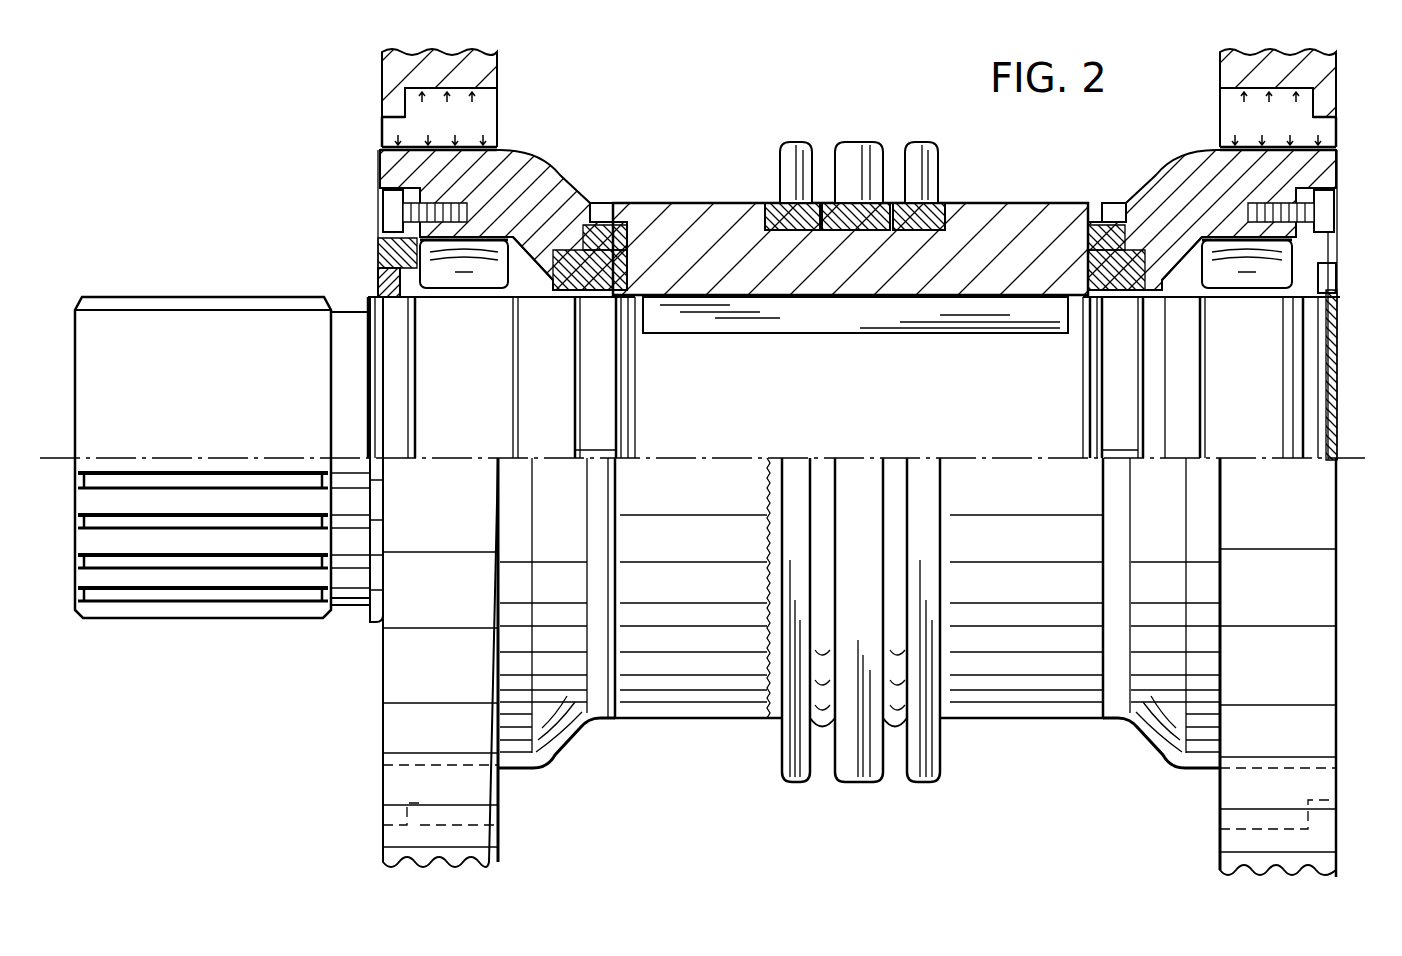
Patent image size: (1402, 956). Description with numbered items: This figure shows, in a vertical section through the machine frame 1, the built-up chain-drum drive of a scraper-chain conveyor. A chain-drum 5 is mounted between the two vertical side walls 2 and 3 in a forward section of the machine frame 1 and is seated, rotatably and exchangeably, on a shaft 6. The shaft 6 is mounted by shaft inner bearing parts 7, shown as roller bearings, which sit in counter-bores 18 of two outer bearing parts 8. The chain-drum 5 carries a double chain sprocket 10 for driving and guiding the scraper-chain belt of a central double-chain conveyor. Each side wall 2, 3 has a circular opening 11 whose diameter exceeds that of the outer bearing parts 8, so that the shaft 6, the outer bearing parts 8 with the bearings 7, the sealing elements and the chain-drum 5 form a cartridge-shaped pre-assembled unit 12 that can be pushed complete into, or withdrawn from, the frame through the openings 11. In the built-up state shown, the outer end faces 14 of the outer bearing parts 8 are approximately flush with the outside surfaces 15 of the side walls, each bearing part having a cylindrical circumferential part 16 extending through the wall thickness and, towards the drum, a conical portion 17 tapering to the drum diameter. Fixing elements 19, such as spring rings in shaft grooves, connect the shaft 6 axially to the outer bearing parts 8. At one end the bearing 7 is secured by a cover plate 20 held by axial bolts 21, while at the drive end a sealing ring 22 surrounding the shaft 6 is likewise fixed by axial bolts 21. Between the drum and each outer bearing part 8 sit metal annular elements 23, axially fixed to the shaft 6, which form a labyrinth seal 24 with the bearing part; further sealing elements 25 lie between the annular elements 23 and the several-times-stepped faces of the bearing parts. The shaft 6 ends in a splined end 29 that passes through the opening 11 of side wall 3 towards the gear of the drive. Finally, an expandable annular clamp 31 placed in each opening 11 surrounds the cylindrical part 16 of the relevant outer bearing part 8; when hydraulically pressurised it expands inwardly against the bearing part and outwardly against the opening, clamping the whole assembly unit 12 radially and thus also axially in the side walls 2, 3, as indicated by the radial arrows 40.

The machine frame 1 is at (630, 108).
The side wall 2 is at (1305, 727).
The side wall 3 is at (410, 740).
The chain-drum 5 is at (966, 215).
The shaft 6 is at (860, 407).
The shaft inner bearing parts 7 is at (462, 290).
The outer bearing parts 8 is at (500, 178).
The chain sprocket 10 is at (862, 148).
The circular opening 11 is at (390, 130).
The pre-assembled unit 12 is at (1003, 735).
The outer end faces 14 is at (378, 180).
The outside surfaces 15 is at (1338, 82).
The cylindrical circumferential part 16 is at (420, 160).
The conical portion 17 is at (582, 225).
The counter-bores 18 is at (548, 205).
The fixing elements 19 is at (378, 288).
The cover plate 20 is at (1338, 345).
The axial bolts 21 is at (385, 212).
The sealing ring 22 is at (378, 262).
The annular elements 23 is at (650, 290).
The labyrinth seal 24 is at (605, 208).
The sealing elements 25 is at (630, 250).
The splined end 29 is at (190, 312).
The annular clamp 31 is at (490, 120).
The radial arrows 40 is at (405, 117).